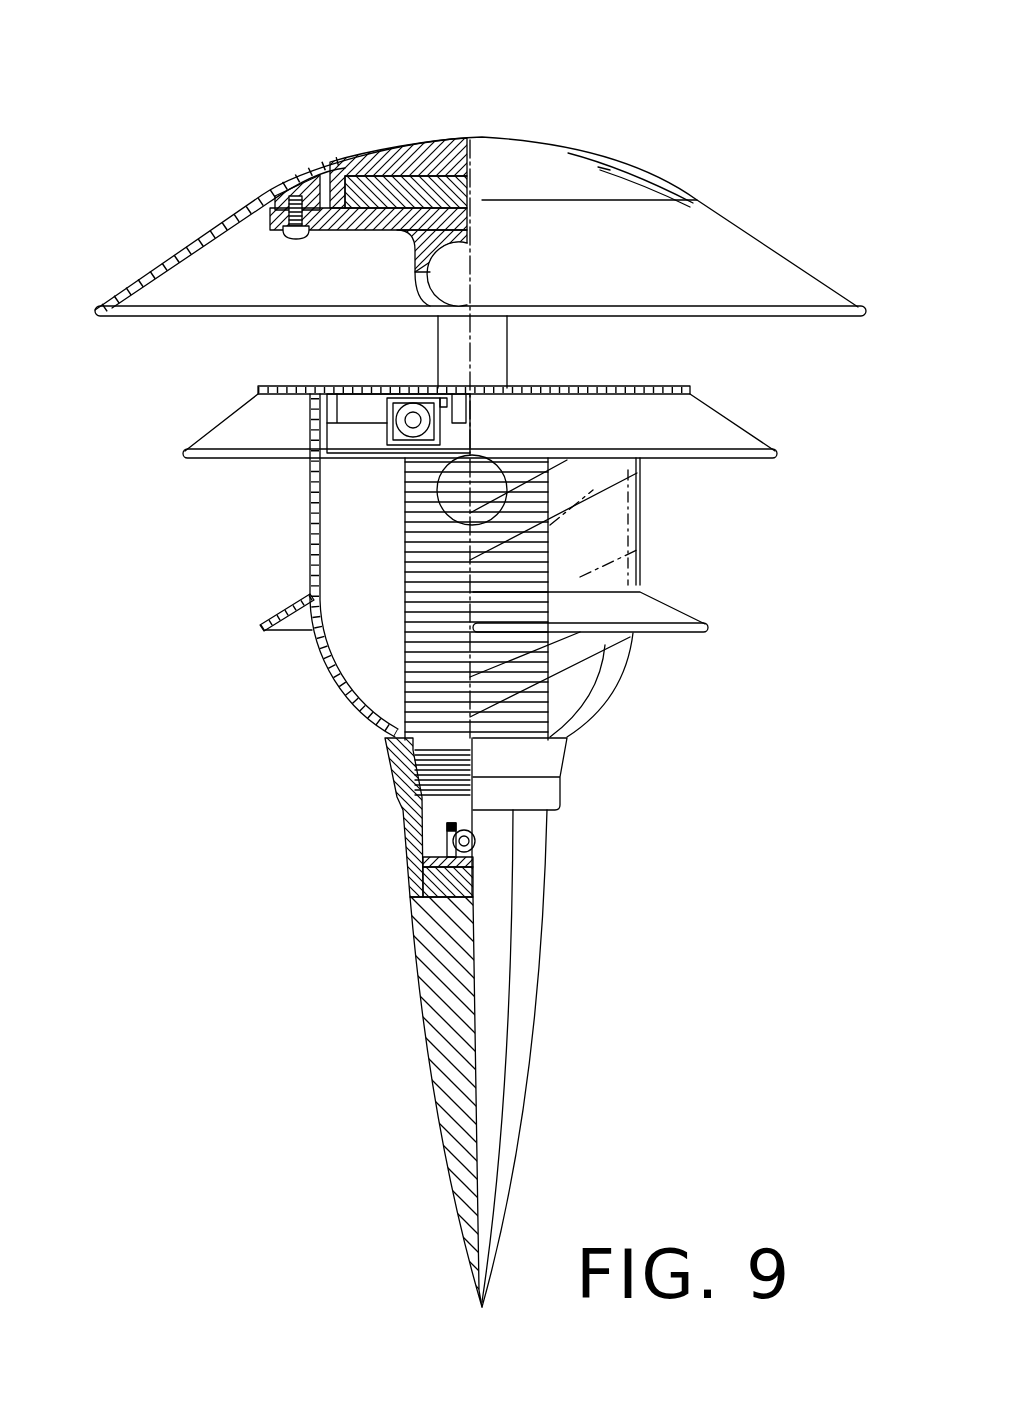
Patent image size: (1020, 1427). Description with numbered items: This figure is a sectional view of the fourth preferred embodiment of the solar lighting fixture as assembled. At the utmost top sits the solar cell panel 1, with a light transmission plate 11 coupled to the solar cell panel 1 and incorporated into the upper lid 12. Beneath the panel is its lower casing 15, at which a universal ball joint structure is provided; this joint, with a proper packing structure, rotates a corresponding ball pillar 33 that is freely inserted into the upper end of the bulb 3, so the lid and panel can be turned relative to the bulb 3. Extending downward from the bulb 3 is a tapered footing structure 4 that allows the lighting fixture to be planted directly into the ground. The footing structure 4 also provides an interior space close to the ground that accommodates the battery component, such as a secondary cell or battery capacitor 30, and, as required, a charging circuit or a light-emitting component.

The upper lid 12 is at (183, 250).
The lower casing 15 is at (326, 208).
The light transmission plate 11 is at (409, 152).
The solar cell panel 1 is at (438, 153).
The ball pillar 33 is at (455, 273).
The bulb 3 is at (303, 533).
The battery capacitor 30 is at (447, 837).
The tapered footing structure 4 is at (458, 1077).